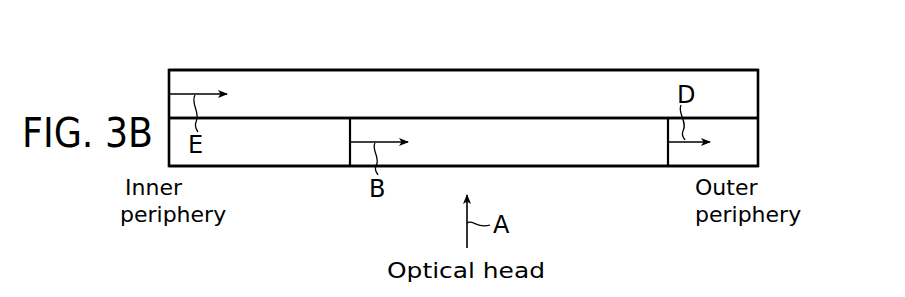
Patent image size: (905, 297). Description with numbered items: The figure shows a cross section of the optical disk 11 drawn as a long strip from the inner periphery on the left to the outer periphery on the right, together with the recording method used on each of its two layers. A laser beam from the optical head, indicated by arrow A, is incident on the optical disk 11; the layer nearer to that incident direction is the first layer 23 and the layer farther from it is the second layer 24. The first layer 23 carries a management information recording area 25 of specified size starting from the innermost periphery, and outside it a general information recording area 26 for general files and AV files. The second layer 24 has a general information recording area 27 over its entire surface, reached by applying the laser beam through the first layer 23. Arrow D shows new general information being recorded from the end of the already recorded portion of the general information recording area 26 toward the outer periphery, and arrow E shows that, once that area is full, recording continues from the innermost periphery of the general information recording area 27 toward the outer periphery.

The optical disk 11 is at (322, 58).
The first layer 23 is at (759, 155).
The second layer 24 is at (759, 96).
The management information recording area 25 is at (297, 155).
The general information recording area 26 is at (580, 155).
The general information recording area 27 is at (526, 80).